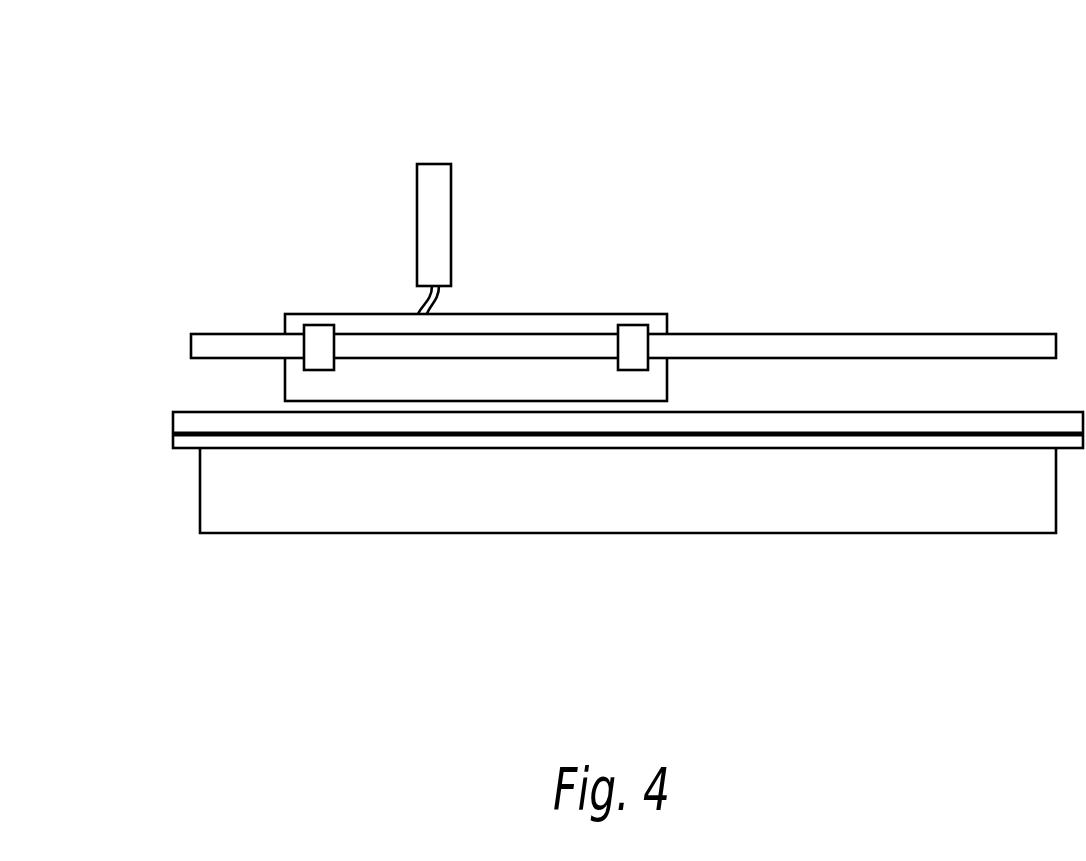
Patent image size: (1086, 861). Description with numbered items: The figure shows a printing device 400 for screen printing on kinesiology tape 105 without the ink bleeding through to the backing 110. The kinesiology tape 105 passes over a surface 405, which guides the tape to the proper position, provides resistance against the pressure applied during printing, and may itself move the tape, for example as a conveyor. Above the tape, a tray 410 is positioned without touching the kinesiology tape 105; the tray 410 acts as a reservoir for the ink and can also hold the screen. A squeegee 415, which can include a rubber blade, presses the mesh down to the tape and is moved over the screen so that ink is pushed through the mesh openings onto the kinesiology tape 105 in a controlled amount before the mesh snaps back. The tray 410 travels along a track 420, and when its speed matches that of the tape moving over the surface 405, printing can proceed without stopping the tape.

The printing device 400 is at (282, 126).
The surface 405 is at (280, 515).
The kinesiology tape 105 is at (215, 424).
The backing 110 is at (253, 440).
The tray 410 is at (352, 385).
The squeegee 415 is at (438, 267).
The track 420 is at (260, 348).